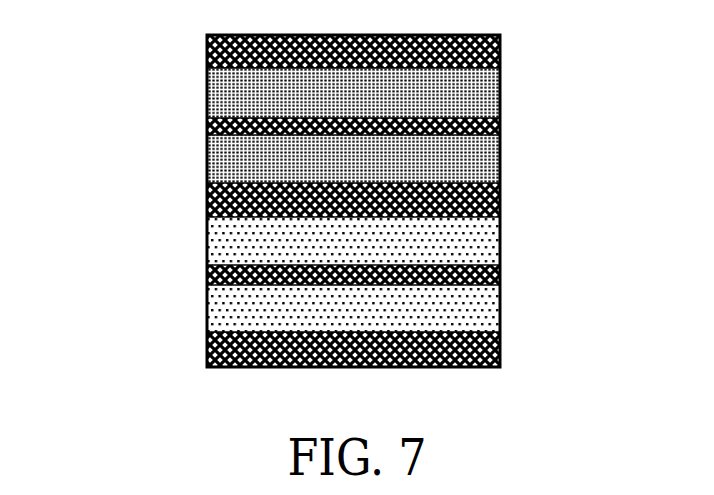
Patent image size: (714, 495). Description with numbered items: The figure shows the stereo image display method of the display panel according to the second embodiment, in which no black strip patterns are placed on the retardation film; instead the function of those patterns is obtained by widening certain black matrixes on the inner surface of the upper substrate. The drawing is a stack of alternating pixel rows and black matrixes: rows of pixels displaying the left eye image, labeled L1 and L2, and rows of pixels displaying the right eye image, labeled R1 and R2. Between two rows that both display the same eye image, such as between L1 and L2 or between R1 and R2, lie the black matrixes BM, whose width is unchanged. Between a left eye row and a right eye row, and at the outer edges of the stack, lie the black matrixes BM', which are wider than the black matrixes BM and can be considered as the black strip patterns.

The black matrixes BM is at (271, 201).
The black matrixes BM' is at (439, 201).
The first left-eye pixel layer L1 is at (353, 93).
The second left-eye pixel layer L2 is at (353, 159).
The first right-eye pixel layer R1 is at (353, 241).
The second right-eye pixel layer R2 is at (353, 308).